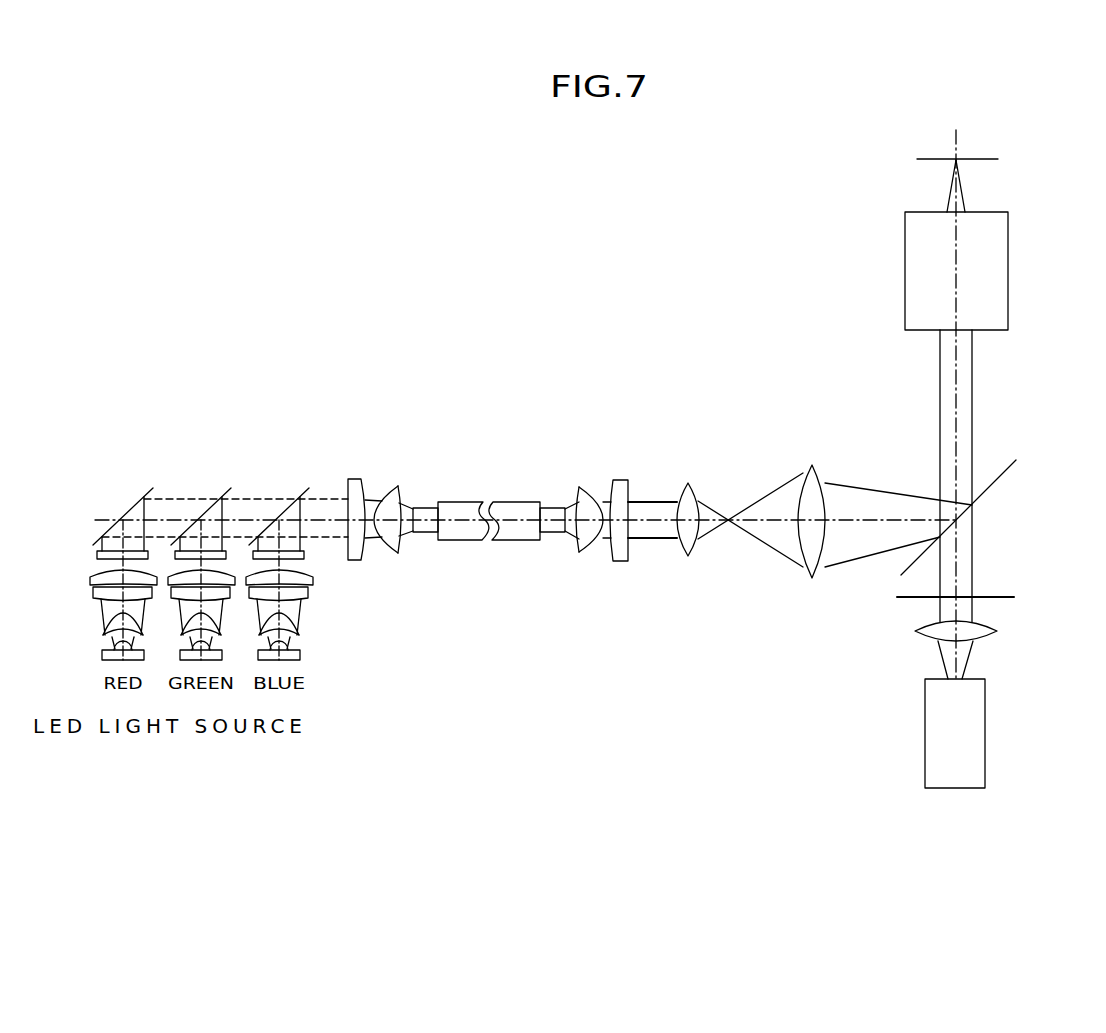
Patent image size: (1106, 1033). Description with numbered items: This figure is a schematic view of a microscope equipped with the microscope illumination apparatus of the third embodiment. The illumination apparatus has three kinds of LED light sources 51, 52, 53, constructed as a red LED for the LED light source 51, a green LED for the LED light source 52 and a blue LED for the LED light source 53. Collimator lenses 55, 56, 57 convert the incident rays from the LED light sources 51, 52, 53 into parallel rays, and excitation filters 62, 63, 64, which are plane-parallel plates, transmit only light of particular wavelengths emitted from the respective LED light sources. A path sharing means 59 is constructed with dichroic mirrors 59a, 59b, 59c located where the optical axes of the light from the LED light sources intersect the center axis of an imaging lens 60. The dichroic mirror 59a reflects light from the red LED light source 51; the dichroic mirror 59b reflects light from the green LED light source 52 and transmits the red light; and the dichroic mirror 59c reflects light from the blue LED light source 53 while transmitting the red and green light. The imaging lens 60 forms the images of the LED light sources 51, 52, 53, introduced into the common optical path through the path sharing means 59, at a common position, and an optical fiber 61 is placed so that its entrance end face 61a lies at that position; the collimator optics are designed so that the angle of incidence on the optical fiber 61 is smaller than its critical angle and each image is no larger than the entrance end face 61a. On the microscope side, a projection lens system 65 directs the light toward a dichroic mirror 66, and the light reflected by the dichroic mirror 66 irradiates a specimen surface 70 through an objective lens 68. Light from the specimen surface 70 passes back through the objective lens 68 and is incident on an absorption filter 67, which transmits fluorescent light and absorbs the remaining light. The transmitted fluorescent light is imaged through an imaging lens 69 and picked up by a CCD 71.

The LED light source 51 is at (92, 644).
The LED light source 52 is at (219, 654).
The LED light source 53 is at (304, 654).
The collimator lens 55 is at (94, 570).
The collimator lens 56 is at (150, 570).
The collimator lens 57 is at (298, 609).
The path sharing means 59 is at (83, 441).
The dichroic mirror 59a is at (131, 509).
The dichroic mirror 59b is at (208, 509).
The dichroic mirror 59c is at (286, 509).
The imaging lens 60 is at (408, 441).
The optical fiber 61 is at (568, 441).
The entrance end face 61a is at (414, 510).
The excitation filter 62 is at (97, 555).
The excitation filter 63 is at (175, 554).
The excitation filter 64 is at (304, 555).
The projection lens system 65 is at (575, 441).
The dichroic mirror 66 is at (998, 480).
The absorption filter 67 is at (987, 597).
The objective lens 68 is at (905, 270).
The imaging lens 69 is at (997, 632).
The specimen surface 70 is at (937, 160).
The CCD 71 is at (985, 735).